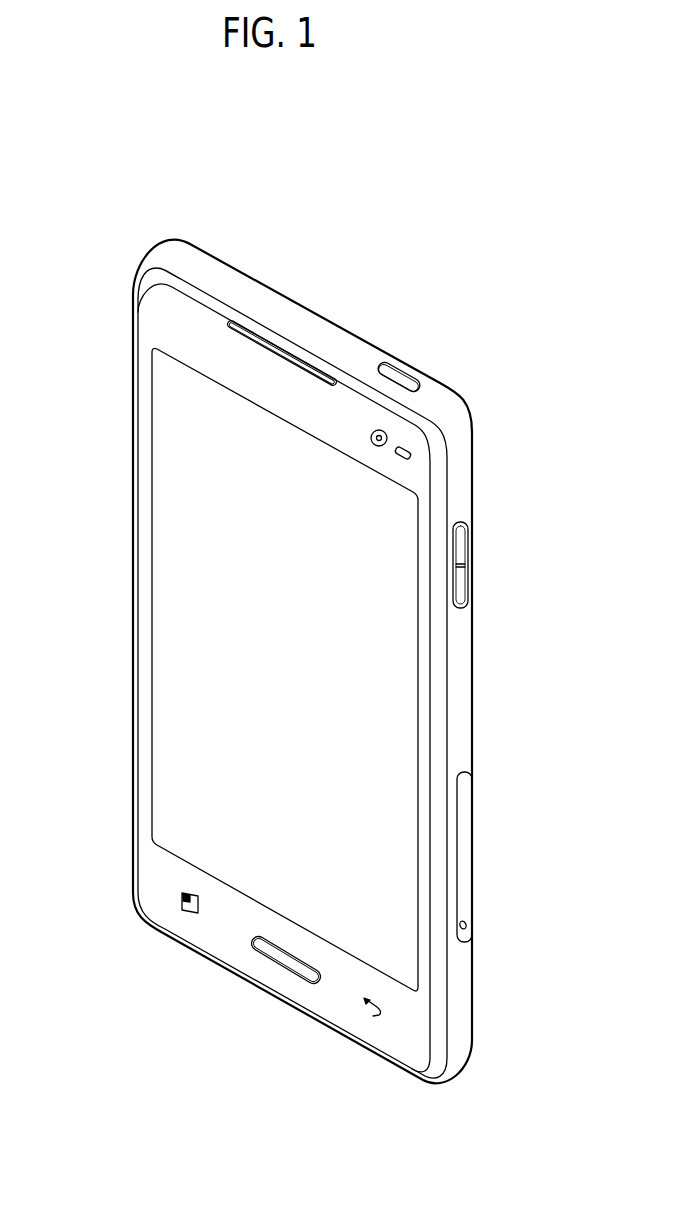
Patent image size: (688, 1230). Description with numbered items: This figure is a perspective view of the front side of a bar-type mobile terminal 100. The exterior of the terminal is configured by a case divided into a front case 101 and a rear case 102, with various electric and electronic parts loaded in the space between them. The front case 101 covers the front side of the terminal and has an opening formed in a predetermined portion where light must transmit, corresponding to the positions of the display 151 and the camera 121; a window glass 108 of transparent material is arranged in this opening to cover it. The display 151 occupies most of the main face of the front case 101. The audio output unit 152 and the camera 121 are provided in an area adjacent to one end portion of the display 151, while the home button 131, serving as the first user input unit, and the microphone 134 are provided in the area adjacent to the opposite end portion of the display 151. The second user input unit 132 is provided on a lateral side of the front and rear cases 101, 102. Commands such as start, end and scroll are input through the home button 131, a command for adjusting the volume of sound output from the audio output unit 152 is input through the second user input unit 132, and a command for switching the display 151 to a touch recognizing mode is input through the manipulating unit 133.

The mobile terminal 100 is at (107, 194).
The front case 101 is at (438, 1028).
The rear case 102 is at (458, 430).
The window glass 108 is at (190, 330).
The camera 121 is at (388, 438).
The home button 131 is at (284, 960).
The second user input unit 132 is at (462, 557).
The manipulating unit 133 is at (400, 377).
The microphone 134 is at (185, 915).
The display 151 is at (170, 630).
The audio output unit 152 is at (280, 347).